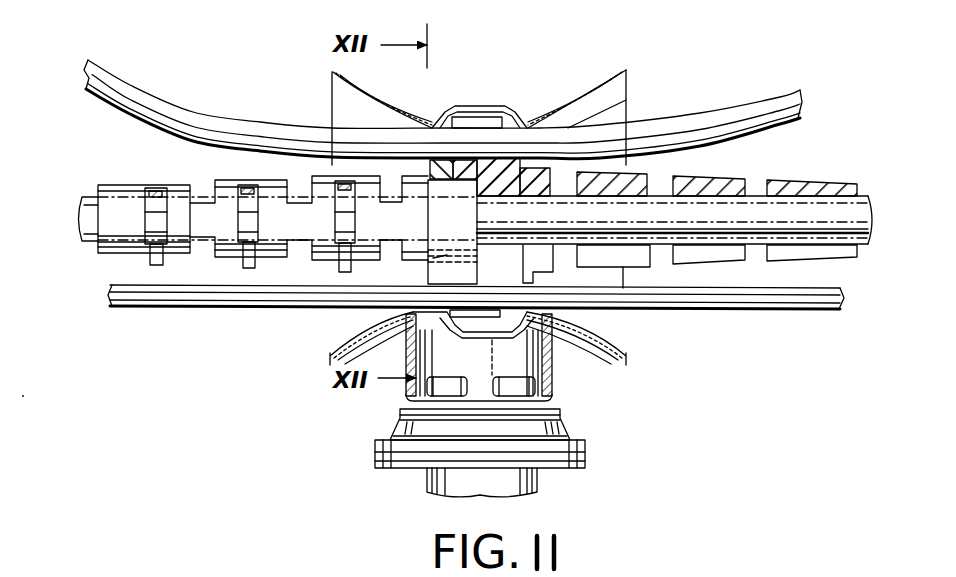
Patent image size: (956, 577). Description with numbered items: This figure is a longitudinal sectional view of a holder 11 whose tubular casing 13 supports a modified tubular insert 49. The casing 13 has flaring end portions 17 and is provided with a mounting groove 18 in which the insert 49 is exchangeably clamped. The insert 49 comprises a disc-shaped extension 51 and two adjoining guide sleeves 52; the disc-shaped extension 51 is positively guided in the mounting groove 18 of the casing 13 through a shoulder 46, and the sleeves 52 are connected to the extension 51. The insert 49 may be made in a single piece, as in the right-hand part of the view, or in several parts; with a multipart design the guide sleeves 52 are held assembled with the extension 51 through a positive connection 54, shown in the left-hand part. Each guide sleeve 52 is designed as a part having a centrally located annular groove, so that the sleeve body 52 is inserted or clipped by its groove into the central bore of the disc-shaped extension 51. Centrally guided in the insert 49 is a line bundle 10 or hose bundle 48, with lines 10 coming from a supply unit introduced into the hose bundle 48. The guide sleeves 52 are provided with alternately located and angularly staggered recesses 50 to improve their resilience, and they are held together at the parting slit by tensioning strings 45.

The line bundle 10 is at (215, 122).
The holder 11 is at (434, 88).
The tubular casing 13 is at (612, 338).
The flaring end portions 17 is at (596, 106).
The mounting groove 18 is at (462, 106).
The tensioning strings 45 is at (245, 268).
The shoulder 46 is at (477, 122).
The hose bundle 48 is at (96, 246).
The tubular insert 49 is at (730, 170).
The recesses 50 is at (204, 185).
The disc-shaped extension 51 is at (440, 166).
The guide sleeves 52 is at (126, 185).
The positive connection 54 is at (434, 223).